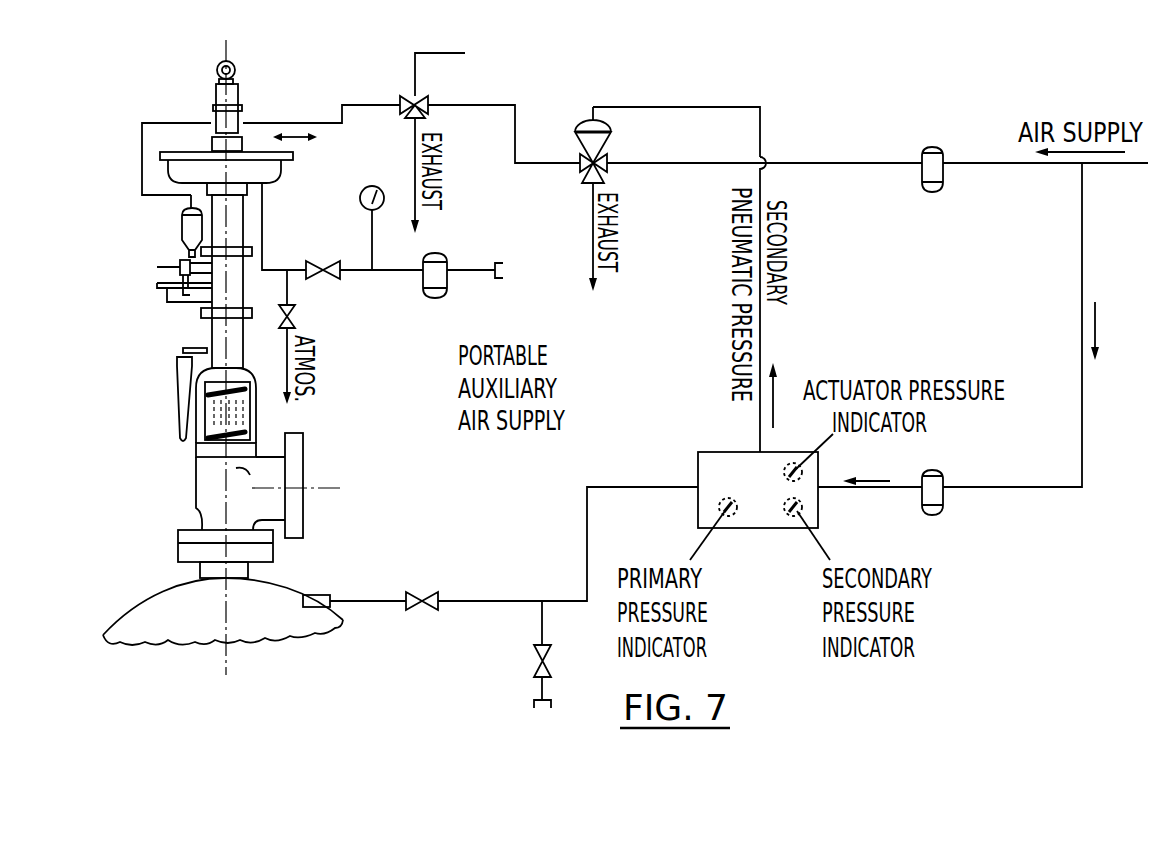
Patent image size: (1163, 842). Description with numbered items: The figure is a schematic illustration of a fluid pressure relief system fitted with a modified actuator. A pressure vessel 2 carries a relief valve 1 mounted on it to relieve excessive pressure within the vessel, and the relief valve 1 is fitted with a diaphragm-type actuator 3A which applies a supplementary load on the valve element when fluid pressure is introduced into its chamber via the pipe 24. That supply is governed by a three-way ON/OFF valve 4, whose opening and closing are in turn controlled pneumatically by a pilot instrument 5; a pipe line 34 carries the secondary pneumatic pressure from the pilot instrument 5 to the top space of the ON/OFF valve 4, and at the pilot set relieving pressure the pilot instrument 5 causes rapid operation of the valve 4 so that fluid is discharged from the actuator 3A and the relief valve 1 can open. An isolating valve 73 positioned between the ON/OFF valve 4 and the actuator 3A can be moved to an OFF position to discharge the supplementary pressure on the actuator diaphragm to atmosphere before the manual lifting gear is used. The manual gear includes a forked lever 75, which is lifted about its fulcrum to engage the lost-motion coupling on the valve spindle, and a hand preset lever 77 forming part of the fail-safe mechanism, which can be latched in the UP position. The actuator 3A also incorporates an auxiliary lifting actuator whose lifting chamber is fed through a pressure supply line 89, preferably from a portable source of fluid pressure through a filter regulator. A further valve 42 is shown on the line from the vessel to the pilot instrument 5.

The relief valve 1 is at (212, 490).
The pressure vessel 2 is at (177, 618).
The actuator 3A is at (207, 168).
The three-way ON/OFF valve 4 is at (598, 122).
The pilot instrument 5 is at (727, 473).
The pipe 24 is at (517, 125).
The pipe line 34 is at (762, 127).
The primary pressure sensing valve 42 is at (395, 597).
The isolating valve 73 is at (412, 103).
The forked lever 75 is at (182, 397).
The hand preset lever 77 is at (170, 293).
The pressure supply line 89 is at (503, 279).